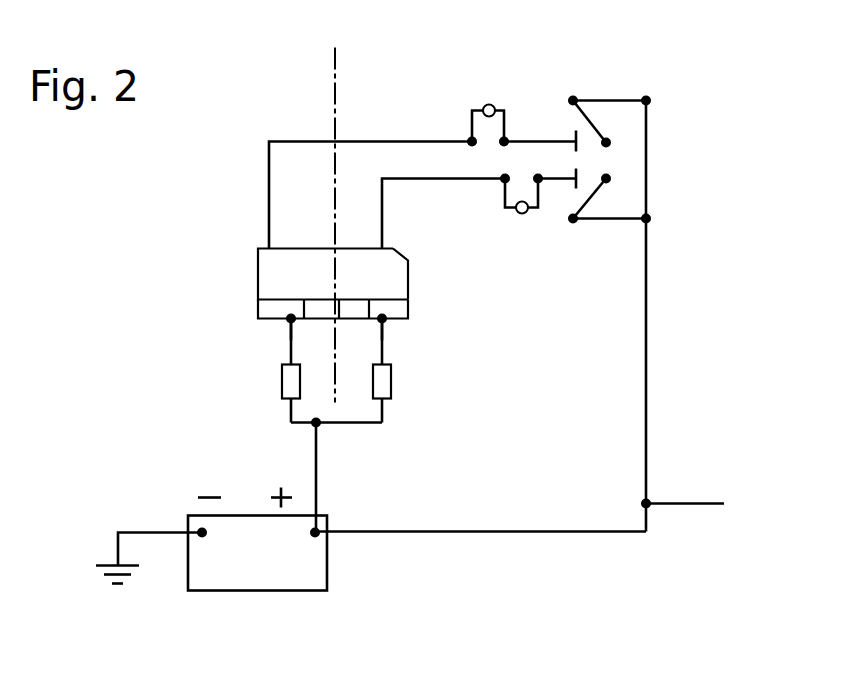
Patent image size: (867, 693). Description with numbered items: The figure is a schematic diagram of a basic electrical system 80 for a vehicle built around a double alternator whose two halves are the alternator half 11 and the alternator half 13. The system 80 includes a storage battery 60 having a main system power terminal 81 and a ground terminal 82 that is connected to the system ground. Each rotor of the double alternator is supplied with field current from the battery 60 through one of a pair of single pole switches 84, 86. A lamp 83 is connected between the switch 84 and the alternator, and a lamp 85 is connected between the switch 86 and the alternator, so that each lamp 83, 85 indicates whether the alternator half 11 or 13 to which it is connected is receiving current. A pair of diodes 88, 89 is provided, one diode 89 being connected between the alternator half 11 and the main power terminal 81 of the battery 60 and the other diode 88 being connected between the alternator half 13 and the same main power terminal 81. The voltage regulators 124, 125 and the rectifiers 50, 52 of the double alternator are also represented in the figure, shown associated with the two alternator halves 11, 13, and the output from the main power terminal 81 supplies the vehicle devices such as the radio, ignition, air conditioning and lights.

The alternator half 11 is at (283, 278).
The alternator half 13 is at (392, 277).
The rectifier 50 is at (262, 310).
The rectifier 52 is at (395, 313).
The voltage regulator 124 is at (320, 312).
The voltage regulator 125 is at (352, 312).
The diode 89 is at (287, 385).
The diode 88 is at (380, 385).
The lamp 83 is at (487, 104).
The lamp 85 is at (522, 214).
The single pole switch 84 is at (590, 148).
The single pole switch 86 is at (587, 174).
The storage battery 60 is at (255, 565).
The ground terminal 82 is at (203, 540).
The main system power terminal 81 is at (313, 540).
The electrical system 80 is at (587, 568).